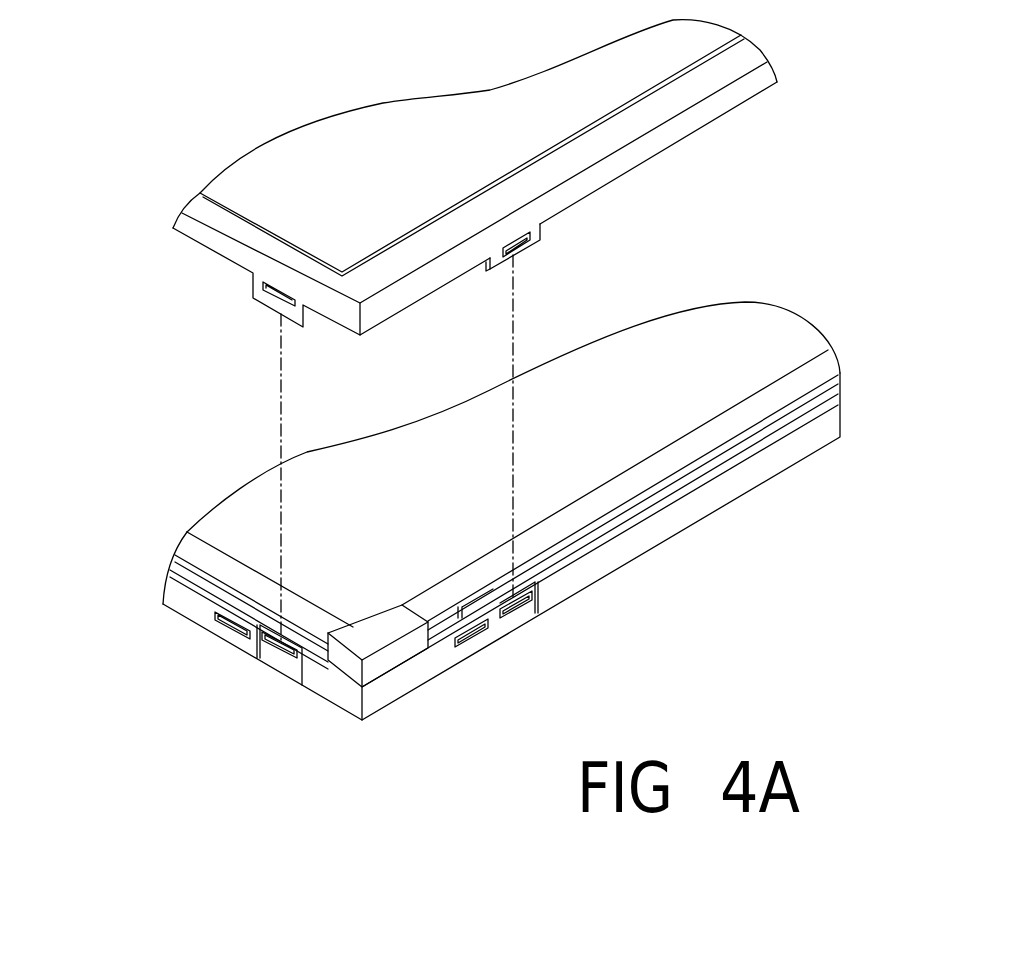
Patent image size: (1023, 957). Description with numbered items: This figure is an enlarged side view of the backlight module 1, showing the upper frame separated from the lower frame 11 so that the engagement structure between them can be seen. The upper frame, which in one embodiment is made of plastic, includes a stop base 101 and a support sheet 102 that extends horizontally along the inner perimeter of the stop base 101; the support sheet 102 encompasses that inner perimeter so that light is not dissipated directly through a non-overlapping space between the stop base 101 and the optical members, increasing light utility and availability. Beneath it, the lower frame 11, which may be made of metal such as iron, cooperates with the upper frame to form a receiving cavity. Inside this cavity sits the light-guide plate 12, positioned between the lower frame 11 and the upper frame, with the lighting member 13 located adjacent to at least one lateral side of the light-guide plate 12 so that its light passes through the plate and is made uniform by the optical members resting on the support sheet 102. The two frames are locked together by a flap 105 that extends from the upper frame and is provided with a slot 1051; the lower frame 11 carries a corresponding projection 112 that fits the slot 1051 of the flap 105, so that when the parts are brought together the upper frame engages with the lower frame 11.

The backlight module 1 is at (897, 158).
The stop base 101 is at (218, 193).
The support sheet 102 is at (270, 232).
The flap 105 is at (520, 250).
The slot 1051 is at (528, 240).
The lower frame 11 is at (780, 458).
The light-guide plate 12 is at (732, 342).
The lighting member 13 is at (437, 617).
The projection 112 is at (517, 607).